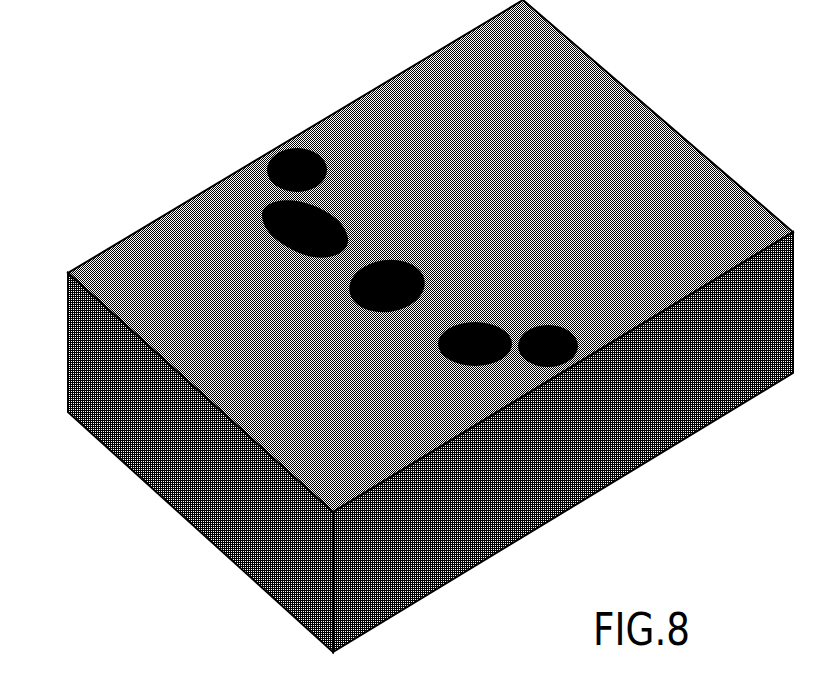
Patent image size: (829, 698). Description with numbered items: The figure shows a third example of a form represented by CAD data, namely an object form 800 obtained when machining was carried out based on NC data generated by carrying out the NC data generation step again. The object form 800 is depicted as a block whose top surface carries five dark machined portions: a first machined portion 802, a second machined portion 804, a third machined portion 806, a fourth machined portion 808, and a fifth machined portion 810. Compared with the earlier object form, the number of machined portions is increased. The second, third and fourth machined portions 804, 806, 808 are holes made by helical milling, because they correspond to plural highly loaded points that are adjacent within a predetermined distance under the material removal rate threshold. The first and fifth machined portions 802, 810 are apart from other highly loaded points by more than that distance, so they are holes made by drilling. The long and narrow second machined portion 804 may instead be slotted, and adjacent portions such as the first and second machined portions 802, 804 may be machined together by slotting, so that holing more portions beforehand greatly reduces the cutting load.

The object form 800 is at (630, 470).
The first machined portion 802 is at (317, 150).
The second machined portion 804 is at (330, 211).
The third machined portion 806 is at (392, 262).
The fourth machined portion 808 is at (478, 322).
The fifth machined portion 810 is at (558, 324).